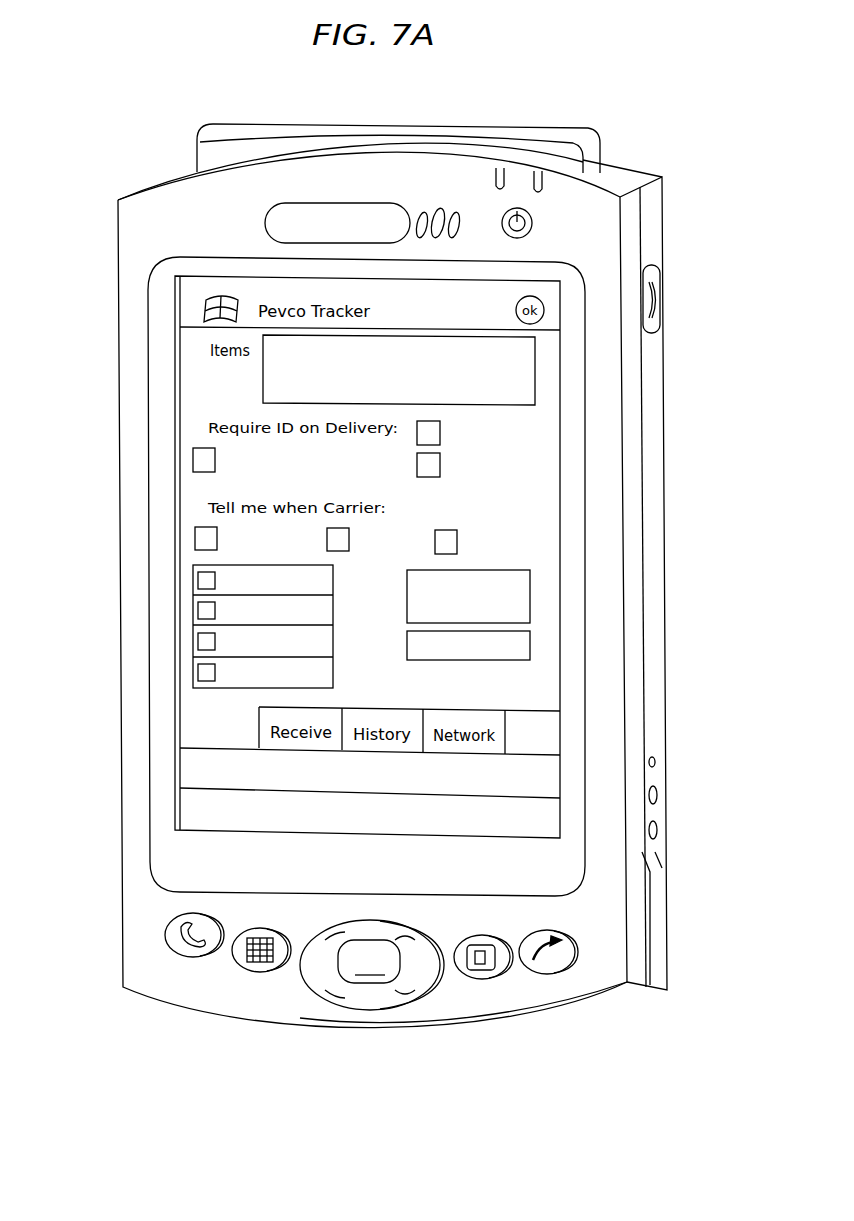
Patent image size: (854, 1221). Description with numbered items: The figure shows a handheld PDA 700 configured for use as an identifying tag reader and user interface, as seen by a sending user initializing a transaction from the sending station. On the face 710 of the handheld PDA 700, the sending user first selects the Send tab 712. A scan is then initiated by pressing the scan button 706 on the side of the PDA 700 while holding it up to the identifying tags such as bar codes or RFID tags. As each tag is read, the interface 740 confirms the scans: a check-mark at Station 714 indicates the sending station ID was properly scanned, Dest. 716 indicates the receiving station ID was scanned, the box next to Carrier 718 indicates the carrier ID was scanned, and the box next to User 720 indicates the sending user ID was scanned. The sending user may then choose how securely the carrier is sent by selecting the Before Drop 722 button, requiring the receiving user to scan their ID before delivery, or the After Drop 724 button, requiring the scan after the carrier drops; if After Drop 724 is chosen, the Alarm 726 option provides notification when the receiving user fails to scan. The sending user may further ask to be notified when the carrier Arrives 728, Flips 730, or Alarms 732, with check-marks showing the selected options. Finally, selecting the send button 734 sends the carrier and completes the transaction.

The handheld PDA 700 is at (628, 124).
The scan button 706 is at (657, 306).
The face 710 is at (188, 207).
The Send tab 712 is at (197, 722).
The Station check box 714 is at (206, 580).
The Dest. check box 716 is at (206, 610).
The Carrier check box 718 is at (206, 641).
The User check box 720 is at (206, 672).
The Before Drop button 722 is at (207, 462).
The After Drop button 724 is at (428, 465).
The Alarm option 726 is at (428, 432).
The Arrives option 728 is at (208, 540).
The Flips option 730 is at (340, 541).
The Alarms option 732 is at (447, 543).
The send button 734 is at (519, 595).
The interface 740 is at (244, 402).